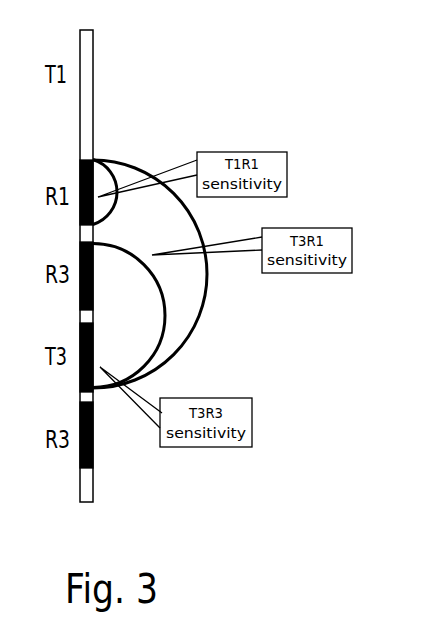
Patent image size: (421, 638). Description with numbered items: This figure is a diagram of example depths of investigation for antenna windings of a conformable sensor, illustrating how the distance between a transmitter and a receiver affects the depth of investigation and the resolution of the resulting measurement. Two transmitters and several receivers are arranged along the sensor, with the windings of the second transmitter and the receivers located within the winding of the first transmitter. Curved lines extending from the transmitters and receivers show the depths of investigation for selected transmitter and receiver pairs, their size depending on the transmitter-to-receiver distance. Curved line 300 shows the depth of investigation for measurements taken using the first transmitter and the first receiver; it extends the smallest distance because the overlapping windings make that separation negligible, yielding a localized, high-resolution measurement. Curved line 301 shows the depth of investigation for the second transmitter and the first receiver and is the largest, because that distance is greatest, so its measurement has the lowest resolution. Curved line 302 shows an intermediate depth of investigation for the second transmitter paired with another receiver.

The curved line 300 is at (113, 175).
The curved line 301 is at (201, 300).
The curved line 302 is at (138, 380).